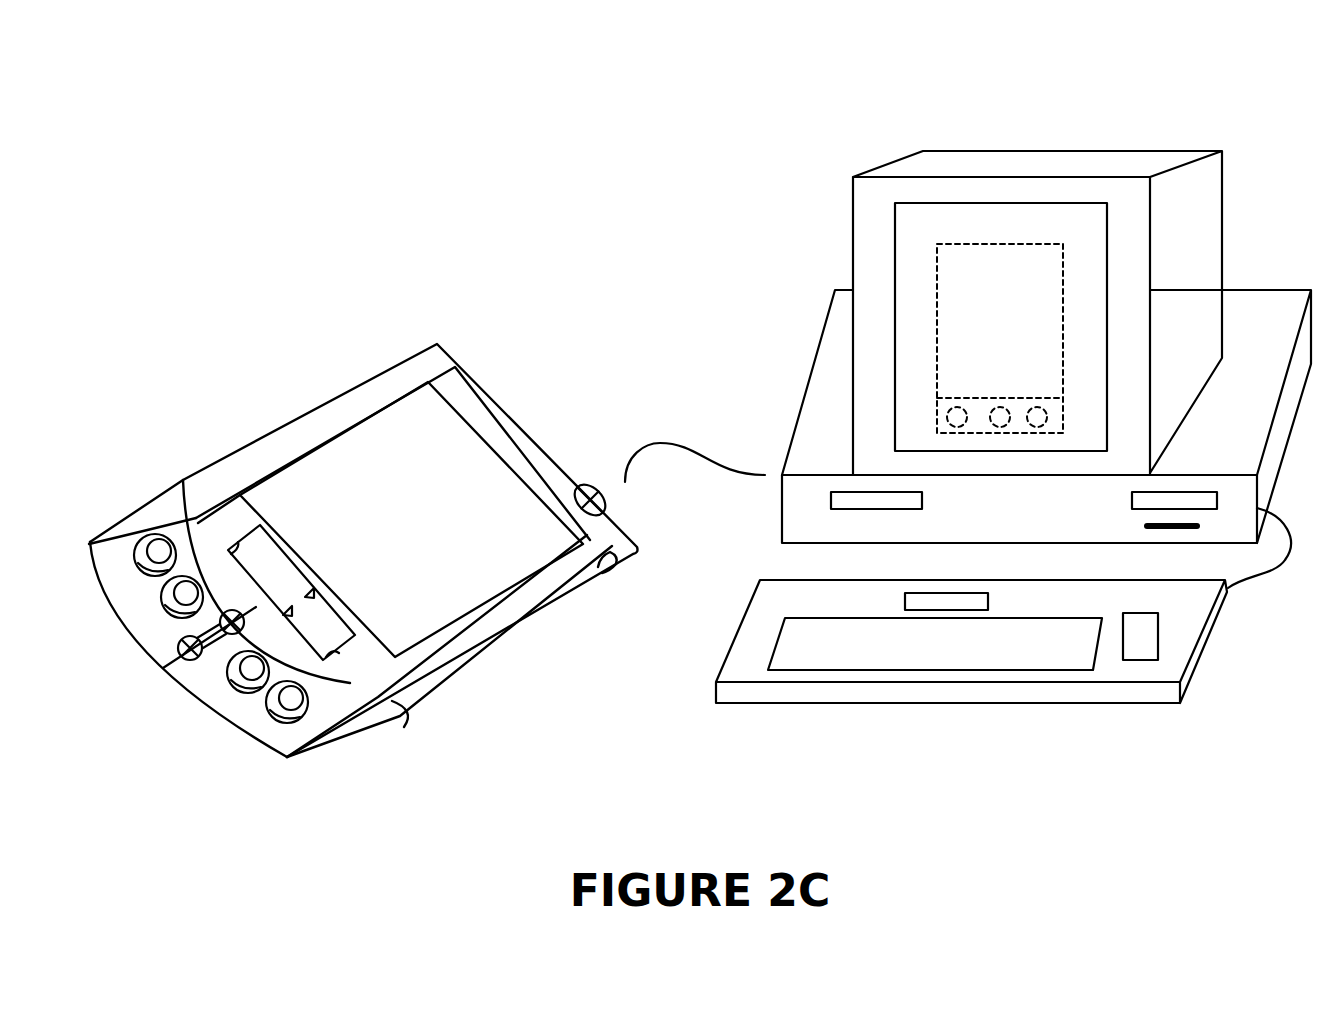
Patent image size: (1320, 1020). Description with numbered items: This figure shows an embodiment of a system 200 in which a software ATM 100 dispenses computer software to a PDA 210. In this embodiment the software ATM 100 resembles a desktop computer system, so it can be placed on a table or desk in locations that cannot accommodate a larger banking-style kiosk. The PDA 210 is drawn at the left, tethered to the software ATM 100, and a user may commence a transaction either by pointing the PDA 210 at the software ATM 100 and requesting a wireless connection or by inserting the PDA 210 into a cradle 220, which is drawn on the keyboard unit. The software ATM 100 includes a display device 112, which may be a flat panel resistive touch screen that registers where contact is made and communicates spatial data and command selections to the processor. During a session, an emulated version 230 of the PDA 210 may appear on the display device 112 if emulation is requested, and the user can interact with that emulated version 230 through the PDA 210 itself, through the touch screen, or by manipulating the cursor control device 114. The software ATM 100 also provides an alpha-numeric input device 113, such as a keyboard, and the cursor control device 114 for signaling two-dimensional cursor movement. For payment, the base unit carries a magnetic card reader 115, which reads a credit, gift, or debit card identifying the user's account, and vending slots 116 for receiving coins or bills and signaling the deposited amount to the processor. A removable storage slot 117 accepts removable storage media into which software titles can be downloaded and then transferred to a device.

The system 200 is at (139, 70).
The PDA 210 is at (436, 513).
The software ATM 100 is at (880, 118).
The display device 112 is at (1068, 177).
The emulated version 230 is at (1016, 366).
The alpha-numeric input device 113 is at (977, 658).
The cursor control device 114 is at (1158, 638).
The magnetic card reader 115 is at (1131, 500).
The vending slots 116 is at (922, 500).
The removable storage slot 117 is at (1147, 525).
The cradle 220 is at (988, 602).